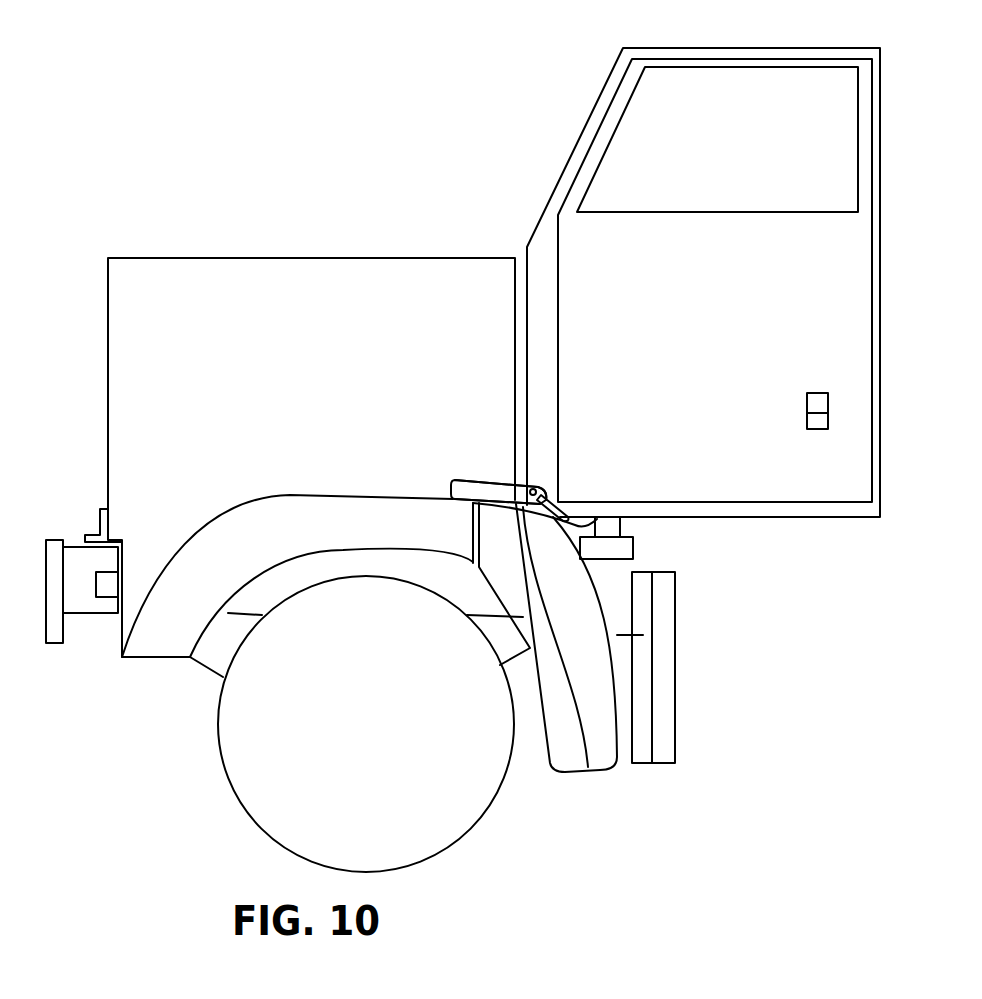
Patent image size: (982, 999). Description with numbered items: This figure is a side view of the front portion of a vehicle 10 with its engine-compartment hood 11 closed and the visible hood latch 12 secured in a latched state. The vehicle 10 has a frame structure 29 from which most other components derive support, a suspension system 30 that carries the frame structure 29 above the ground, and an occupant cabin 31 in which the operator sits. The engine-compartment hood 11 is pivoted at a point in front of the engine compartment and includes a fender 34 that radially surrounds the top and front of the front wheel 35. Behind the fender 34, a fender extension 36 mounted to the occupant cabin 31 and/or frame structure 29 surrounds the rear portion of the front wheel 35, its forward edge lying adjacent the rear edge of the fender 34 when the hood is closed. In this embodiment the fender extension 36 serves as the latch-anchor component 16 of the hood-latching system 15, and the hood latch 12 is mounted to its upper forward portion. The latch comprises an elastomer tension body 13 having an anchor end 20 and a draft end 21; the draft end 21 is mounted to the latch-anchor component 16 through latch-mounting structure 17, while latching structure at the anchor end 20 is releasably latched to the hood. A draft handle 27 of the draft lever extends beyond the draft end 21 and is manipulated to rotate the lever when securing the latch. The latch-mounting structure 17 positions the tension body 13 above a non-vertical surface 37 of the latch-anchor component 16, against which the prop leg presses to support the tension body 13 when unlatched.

The vehicle 10 is at (578, 77).
The engine-compartment hood 11 is at (363, 285).
The hood latch 12 is at (498, 482).
The tension body 13 is at (518, 483).
The hood-latching system 15 is at (527, 487).
The latch-anchor component 16 is at (577, 622).
The latch-mounting structure 17 is at (590, 530).
The anchor end 20 is at (470, 487).
The draft end 21 is at (532, 487).
The draft handle 27 is at (557, 502).
The frame structure 29 is at (54, 556).
The suspension system 30 is at (237, 698).
The occupant cabin 31 is at (560, 187).
The fender 34 is at (288, 512).
The front wheel 35 is at (468, 780).
The fender extension 36 is at (597, 653).
The non-vertical surface 37 is at (588, 767).